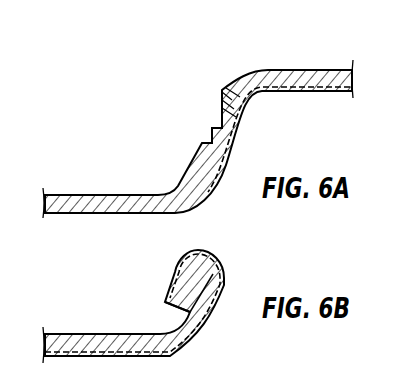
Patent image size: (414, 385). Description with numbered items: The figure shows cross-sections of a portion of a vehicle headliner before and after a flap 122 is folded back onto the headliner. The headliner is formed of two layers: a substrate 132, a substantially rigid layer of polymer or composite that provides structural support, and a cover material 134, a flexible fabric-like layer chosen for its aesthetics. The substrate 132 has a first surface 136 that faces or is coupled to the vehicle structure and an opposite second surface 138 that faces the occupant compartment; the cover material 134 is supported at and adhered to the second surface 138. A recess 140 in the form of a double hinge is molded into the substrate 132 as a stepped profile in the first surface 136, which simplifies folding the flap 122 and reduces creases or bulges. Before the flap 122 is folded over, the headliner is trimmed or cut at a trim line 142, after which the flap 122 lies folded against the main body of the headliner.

In FIG. 6B, the flap 122 is at (165, 282).
In FIG. 6A, the substrate 132 is at (298, 70).
In FIG. 6A, the cover material 134 is at (323, 93).
In FIG. 6B, the cover material 134 is at (227, 272).
In FIG. 6A, the first surface 136 is at (105, 194).
In FIG. 6A, the second surface 138 is at (83, 214).
In FIG. 6A, the recess 140 is at (202, 132).
In FIG. 6A, the trim line 142 is at (225, 87).